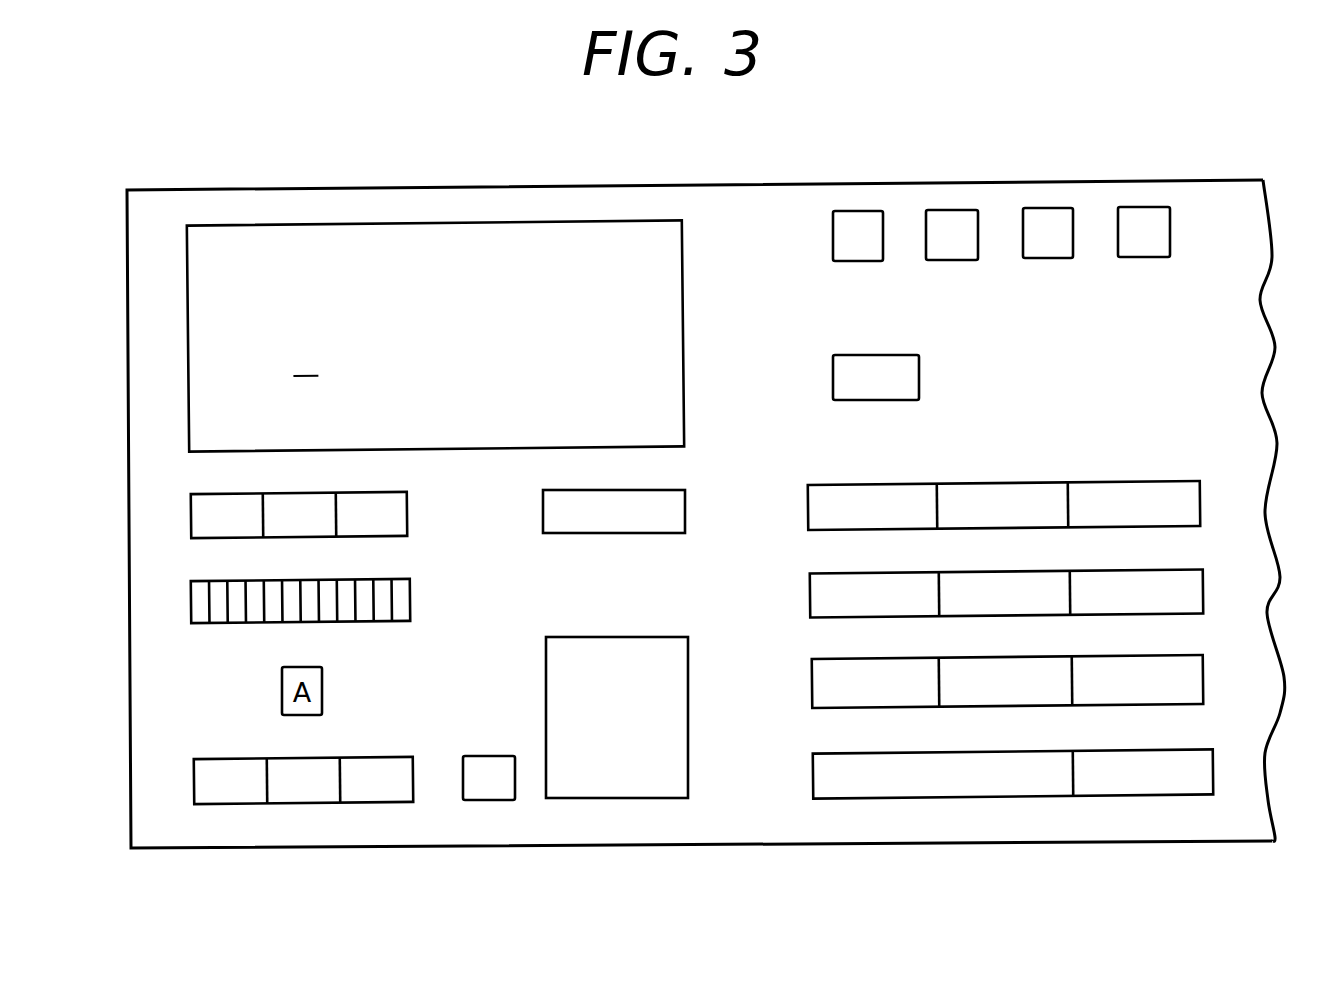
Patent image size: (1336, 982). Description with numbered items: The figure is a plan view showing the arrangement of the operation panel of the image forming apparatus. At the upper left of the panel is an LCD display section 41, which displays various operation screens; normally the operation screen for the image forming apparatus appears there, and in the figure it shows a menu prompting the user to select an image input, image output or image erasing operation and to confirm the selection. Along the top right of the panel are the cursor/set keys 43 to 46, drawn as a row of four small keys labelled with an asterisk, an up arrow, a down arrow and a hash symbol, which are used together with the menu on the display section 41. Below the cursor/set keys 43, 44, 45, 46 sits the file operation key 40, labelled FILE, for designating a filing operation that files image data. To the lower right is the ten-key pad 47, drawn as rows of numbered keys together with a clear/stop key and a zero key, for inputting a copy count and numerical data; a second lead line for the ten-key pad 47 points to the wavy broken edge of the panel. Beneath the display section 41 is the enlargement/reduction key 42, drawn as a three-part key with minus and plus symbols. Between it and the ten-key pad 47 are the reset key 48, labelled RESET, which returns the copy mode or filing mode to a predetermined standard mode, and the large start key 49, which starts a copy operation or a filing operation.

The file operation key 40 is at (920, 380).
The LCD display section 41 is at (683, 270).
The enlargement/reduction key 42 is at (408, 517).
The cursor/set key 43 is at (1150, 207).
The cursor/set key 44 is at (1055, 208).
The cursor/set key 45 is at (960, 210).
The cursor/set key 46 is at (868, 211).
The ten-key pad 47 is at (1275, 258).
The reset key 48 is at (686, 512).
The start key 49 is at (690, 690).